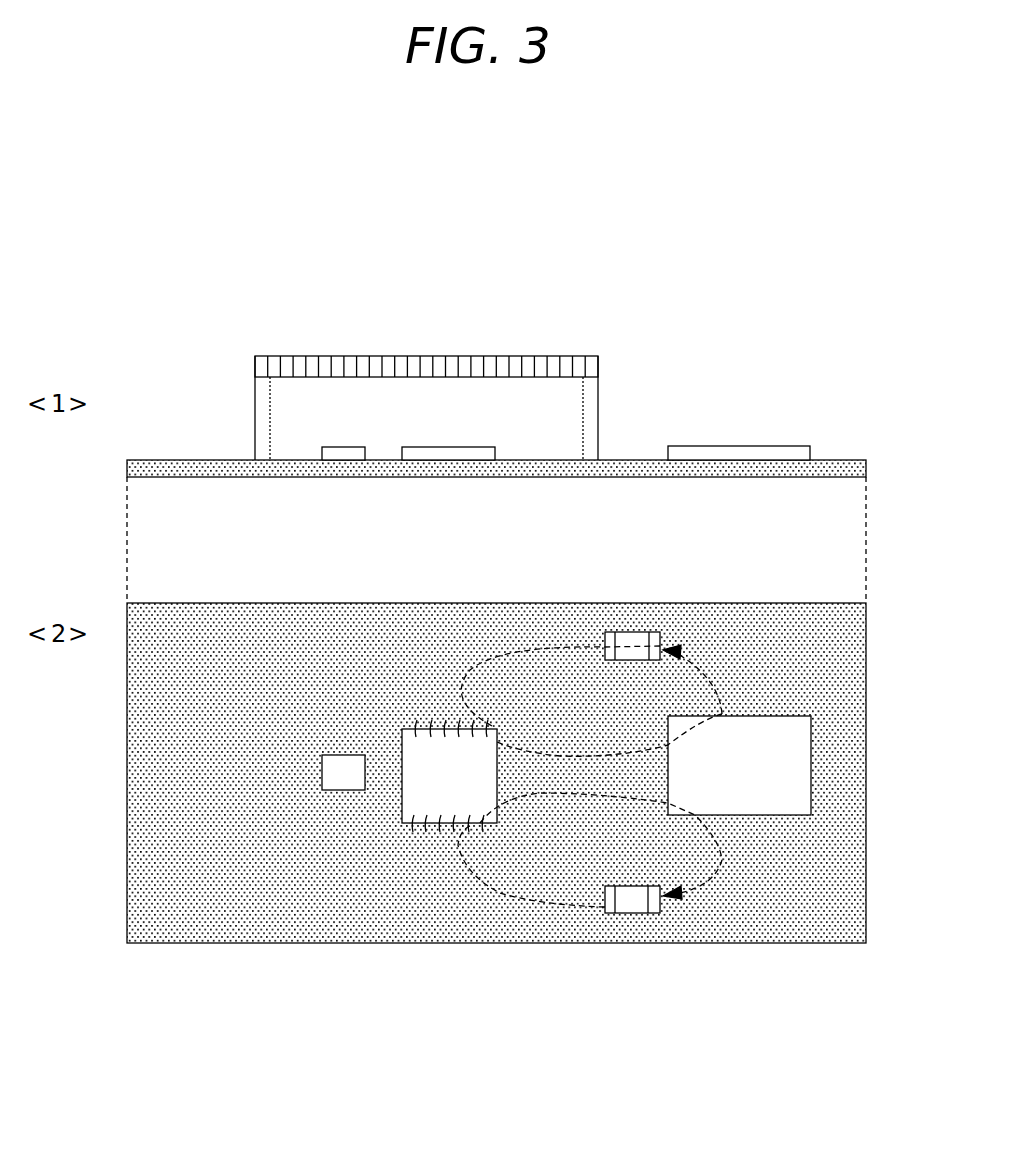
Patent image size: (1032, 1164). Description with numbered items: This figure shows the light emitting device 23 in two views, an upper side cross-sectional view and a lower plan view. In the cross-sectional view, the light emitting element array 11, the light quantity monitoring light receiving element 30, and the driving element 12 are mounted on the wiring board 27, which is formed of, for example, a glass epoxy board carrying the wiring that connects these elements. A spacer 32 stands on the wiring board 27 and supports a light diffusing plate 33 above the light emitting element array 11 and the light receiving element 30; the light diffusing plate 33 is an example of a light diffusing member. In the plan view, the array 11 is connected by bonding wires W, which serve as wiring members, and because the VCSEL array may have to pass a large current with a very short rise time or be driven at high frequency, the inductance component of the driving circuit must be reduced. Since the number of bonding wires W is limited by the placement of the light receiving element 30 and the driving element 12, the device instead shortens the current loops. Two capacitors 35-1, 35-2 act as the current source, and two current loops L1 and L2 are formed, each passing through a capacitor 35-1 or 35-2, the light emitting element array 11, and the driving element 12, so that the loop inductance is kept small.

The light emitting element array 11 is at (448, 447).
The driving element 12 is at (793, 446).
The light emitting device 23 is at (660, 567).
The wiring board 27 is at (868, 462).
The light quantity monitoring light receiving element 30 is at (340, 447).
The spacer 32 is at (258, 408).
The light diffusing plate 33 is at (418, 355).
The capacitor 35-1 is at (654, 914).
The capacitor 35-2 is at (612, 632).
The bonding wire W is at (412, 727).
The current loop L1 is at (599, 855).
The current loop L2 is at (599, 695).